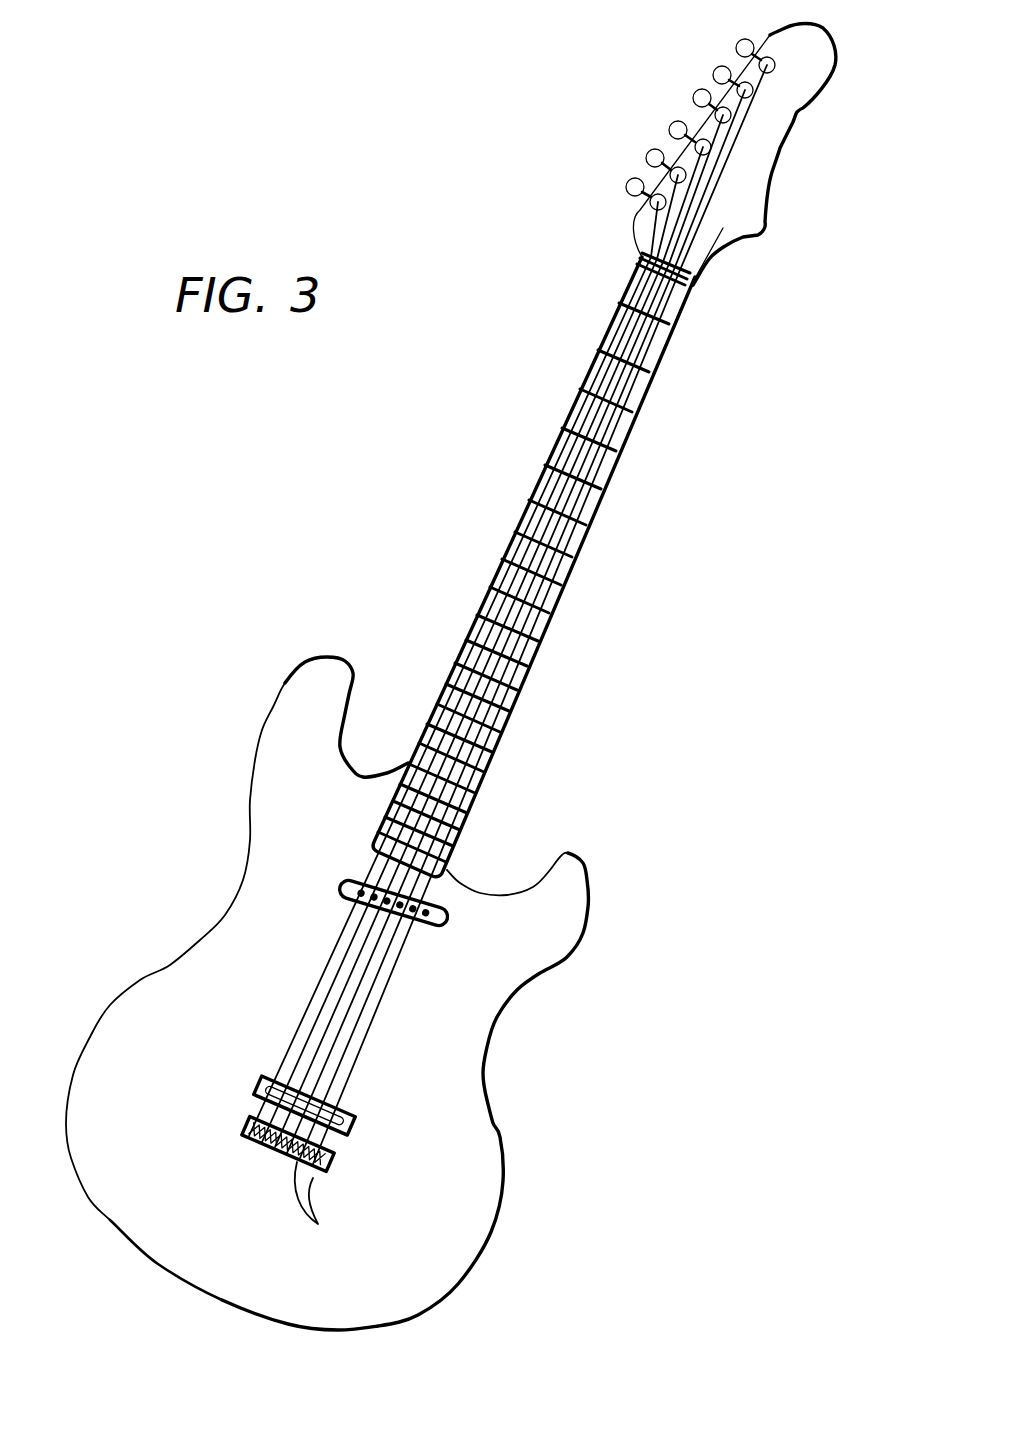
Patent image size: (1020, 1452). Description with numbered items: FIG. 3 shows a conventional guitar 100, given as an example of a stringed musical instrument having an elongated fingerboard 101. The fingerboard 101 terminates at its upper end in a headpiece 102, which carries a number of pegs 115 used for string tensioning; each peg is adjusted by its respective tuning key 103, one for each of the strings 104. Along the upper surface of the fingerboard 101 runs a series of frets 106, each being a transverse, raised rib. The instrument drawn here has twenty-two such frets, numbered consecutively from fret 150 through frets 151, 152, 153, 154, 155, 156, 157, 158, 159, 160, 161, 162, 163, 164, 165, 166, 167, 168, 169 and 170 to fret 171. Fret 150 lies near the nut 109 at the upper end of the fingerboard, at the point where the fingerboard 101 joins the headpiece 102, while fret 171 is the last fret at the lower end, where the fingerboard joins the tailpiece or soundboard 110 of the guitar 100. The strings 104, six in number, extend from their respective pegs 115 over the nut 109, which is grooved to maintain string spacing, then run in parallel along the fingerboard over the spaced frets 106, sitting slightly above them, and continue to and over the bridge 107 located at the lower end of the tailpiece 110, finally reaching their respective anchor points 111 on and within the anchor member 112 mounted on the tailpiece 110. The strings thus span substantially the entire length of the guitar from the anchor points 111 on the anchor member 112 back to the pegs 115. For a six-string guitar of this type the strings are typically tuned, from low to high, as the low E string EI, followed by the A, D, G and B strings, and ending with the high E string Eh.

The guitar 100 is at (430, 640).
The fingerboard 101 is at (472, 627).
The headpiece 102 is at (783, 122).
The tuning keys 103 is at (717, 66).
The strings 104 is at (723, 228).
The frets 106 is at (640, 340).
The bridge 107 is at (352, 1110).
The nut 109 is at (694, 282).
The tailpiece or soundboard 110 is at (298, 708).
The anchor points 111 is at (320, 1205).
The anchor member 112 is at (250, 1125).
The pegs 115 is at (651, 151).
The fret 150 is at (669, 324).
The fret 151 is at (649, 372).
The fret 152 is at (632, 412).
The fret 153 is at (616, 451).
The fret 154 is at (601, 489).
The fret 155 is at (586, 525).
The fret 156 is at (572, 557).
The fret 157 is at (561, 585).
The fret 158 is at (549, 613).
The fret 159 is at (538, 641).
The fret 160 is at (527, 666).
The fret 161 is at (517, 690).
The fret 162 is at (509, 711).
The fret 163 is at (500, 732).
The fret 164 is at (492, 752).
The fret 165 is at (484, 772).
The fret 166 is at (409, 764).
The fret 167 is at (467, 813).
The fret 168 is at (393, 801).
The fret 169 is at (385, 817).
The fret 170 is at (378, 832).
The fret 171 is at (447, 882).
The low E string EI is at (593, 363).
The A string A is at (599, 388).
The D string D is at (587, 423).
The G string G is at (577, 467).
The B string B is at (573, 503).
The high E string Eh is at (530, 549).